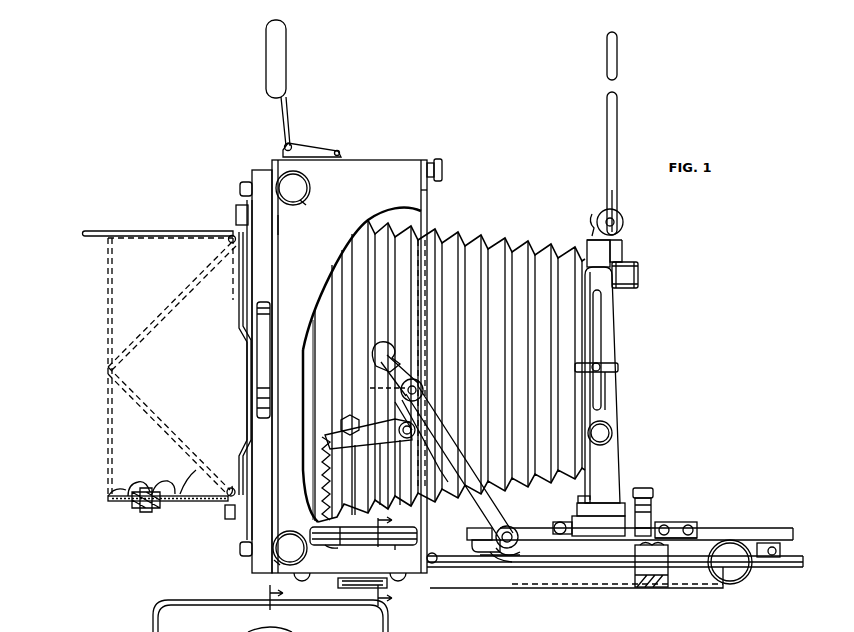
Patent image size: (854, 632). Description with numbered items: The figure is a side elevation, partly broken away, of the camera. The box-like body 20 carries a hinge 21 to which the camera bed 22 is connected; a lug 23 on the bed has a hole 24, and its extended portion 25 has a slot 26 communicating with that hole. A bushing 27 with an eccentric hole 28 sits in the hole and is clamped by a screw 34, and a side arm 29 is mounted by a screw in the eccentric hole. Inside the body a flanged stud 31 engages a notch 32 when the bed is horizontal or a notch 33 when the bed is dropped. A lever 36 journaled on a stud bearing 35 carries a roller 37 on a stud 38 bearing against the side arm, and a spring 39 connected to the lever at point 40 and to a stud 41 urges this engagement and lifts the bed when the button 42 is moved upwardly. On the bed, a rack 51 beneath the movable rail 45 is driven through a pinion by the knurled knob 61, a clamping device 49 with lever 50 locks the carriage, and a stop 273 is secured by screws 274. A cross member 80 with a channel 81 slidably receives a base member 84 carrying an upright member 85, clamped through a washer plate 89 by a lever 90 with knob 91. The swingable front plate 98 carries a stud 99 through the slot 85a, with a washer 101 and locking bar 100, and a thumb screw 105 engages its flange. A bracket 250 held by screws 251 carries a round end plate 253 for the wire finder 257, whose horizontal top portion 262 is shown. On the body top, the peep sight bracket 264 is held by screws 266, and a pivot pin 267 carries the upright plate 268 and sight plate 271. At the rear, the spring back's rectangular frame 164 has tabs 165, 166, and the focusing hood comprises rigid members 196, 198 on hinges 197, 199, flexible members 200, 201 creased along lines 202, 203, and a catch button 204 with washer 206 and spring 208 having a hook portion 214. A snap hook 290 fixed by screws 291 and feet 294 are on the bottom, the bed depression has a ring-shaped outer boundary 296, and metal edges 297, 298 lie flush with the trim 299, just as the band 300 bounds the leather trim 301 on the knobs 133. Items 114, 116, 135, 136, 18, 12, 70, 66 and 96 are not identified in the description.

The camera body 20 is at (404, 152).
The trim 299 is at (388, 180).
The edge 298 is at (421, 196).
The edge 297 is at (280, 225).
The button 42 is at (443, 168).
The metallic band 300 is at (302, 178).
The leather trim 301 is at (300, 190).
The metallic knobs 133 is at (311, 205).
The sight plate 271 is at (283, 36).
The upright plate 268 is at (290, 100).
The pivot pin 267 is at (292, 144).
The bracket 264 is at (306, 151).
The screws 266 is at (340, 152).
The back panel 114 is at (258, 170).
The back holder 135 is at (242, 174).
The knob 116 is at (240, 189).
The extended web or tab 165 is at (240, 320).
The rectangular frame 164 is at (240, 378).
The extended web or tab 166 is at (240, 422).
The roller 136 is at (264, 365).
The rigid rectangular member 196 is at (151, 231).
The hinge 197 is at (228, 242).
The flexible rectangular member 201 is at (108, 442).
The pre-crease line 202 is at (158, 332).
The pre-crease line 203 is at (161, 414).
The rigid rectangular member 198 is at (205, 503).
The hinge 199 is at (229, 486).
The catch button 204 is at (154, 509).
The washer 206 is at (151, 479).
The spring 208 is at (166, 482).
The flexible rectangular member 200 is at (124, 499).
The hook portion 214 is at (186, 485).
The dimension 18 is at (394, 559).
The dimension 12 is at (287, 597).
The side arm 29 is at (478, 512).
The stud bearing 35 is at (360, 480).
The lever 36 is at (386, 474).
The roller 37 is at (406, 472).
The notch 33 is at (378, 356).
The flanged stud 31 is at (421, 384).
The notch 32 is at (378, 388).
The lug 23 is at (478, 548).
The hole 24 is at (520, 548).
The stud 38 is at (399, 430).
The point 40 is at (330, 437).
The spring 39 is at (322, 480).
The snap hook 290 is at (382, 546).
The rail slot 70 is at (344, 532).
The stud 41 is at (327, 546).
The rail stop 66 is at (396, 546).
The feet 294 is at (422, 610).
The screws 291 is at (356, 588).
The horizontal top portion 262 is at (305, 607).
The hinge 21 is at (433, 566).
The camera bed 22 is at (610, 570).
The screw 34 is at (470, 535).
The slot 26 is at (474, 547).
The eccentric hole 28 is at (509, 527).
The bushing 27 is at (516, 532).
The extended portion 25 is at (482, 558).
The outer boundary 296 is at (500, 568).
The upright member 85 is at (614, 397).
The slot 85a is at (601, 326).
The locking bar 100 is at (618, 366).
The washer 101 is at (600, 366).
The stud 99 is at (620, 372).
The thumb screw 105 is at (612, 431).
The front plate 98 is at (587, 252).
The bracket 250 is at (622, 241).
The screws 251 is at (588, 222).
The round end plate 253 is at (622, 222).
The wire finder 257 is at (618, 110).
The base member 84 is at (606, 506).
The channel 81 is at (592, 536).
The cross member 80 is at (563, 535).
The washer plate 89 is at (578, 500).
The lever 90 is at (641, 489).
The knob 91 is at (651, 500).
The block 96 is at (661, 522).
The stop 273 is at (675, 525).
The screws 274 is at (676, 540).
The rack 51 is at (651, 588).
The knurled knob 61 is at (733, 585).
The movable rail 45 is at (736, 540).
The clamping device 49 is at (776, 545).
The lever 50 is at (758, 560).